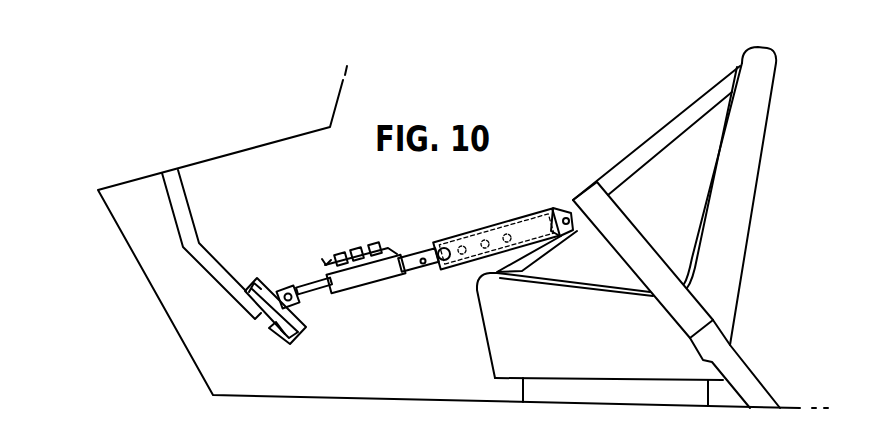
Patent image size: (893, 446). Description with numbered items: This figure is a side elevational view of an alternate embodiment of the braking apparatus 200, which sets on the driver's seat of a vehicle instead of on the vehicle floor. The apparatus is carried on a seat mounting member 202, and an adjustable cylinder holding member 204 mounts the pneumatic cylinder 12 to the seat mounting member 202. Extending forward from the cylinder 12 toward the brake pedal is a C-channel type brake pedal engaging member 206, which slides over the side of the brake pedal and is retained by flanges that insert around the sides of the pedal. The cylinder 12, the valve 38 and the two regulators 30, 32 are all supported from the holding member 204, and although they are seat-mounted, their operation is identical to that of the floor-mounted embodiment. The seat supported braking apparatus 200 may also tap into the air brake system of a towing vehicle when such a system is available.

The pneumatic cylinder 12 is at (366, 299).
The regulator 30 is at (333, 242).
The regulator 32 is at (366, 233).
The valve 38 is at (393, 226).
The braking apparatus 200 is at (456, 215).
The seat mounting member 202 is at (656, 133).
The adjustable cylinder holding member 204 is at (503, 217).
The brake pedal engaging member 206 is at (275, 288).